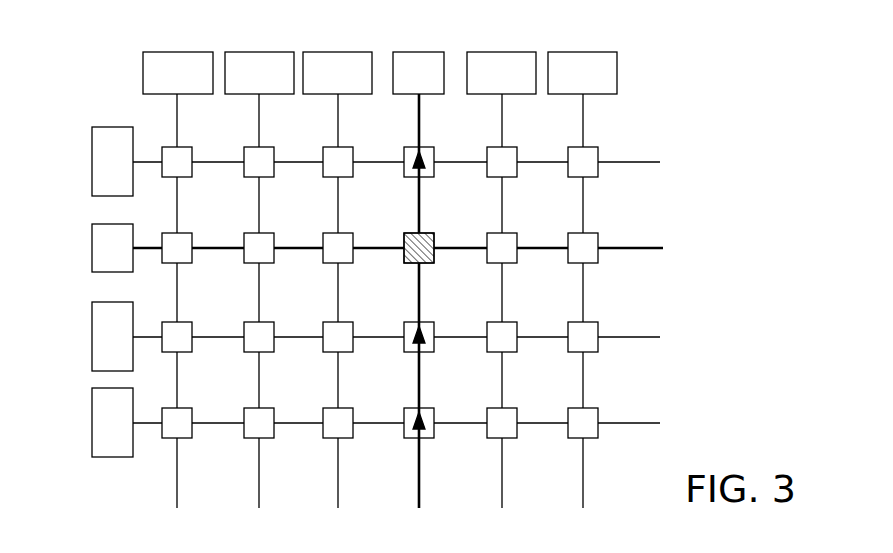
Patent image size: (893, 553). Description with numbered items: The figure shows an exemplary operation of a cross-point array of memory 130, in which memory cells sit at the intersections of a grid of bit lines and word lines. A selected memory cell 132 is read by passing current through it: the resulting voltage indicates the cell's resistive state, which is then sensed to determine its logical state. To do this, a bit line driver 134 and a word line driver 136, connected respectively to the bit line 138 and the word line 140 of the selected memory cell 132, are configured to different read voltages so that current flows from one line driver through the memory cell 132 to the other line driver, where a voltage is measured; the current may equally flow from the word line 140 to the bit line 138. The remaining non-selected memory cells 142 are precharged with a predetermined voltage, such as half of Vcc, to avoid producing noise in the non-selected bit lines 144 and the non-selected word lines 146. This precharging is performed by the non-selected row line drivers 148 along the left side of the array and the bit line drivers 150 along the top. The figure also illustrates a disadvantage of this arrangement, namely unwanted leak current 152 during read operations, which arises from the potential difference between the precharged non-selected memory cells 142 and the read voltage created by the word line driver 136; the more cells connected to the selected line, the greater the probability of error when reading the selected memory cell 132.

The cross-point array of memory 130 is at (717, 75).
The selected memory cell 132 is at (434, 240).
The bit line driver 134 is at (92, 248).
The word line driver 136 is at (423, 52).
The bit line 138 is at (420, 492).
The word line 140 is at (645, 248).
The non-selected memory cells 142 is at (598, 150).
The non-selected bit lines 144 is at (645, 423).
The non-selected word lines 146 is at (584, 492).
The non-selected row line drivers 148 is at (92, 162).
The bit line drivers 150 is at (181, 52).
The leak current 152 is at (433, 160).